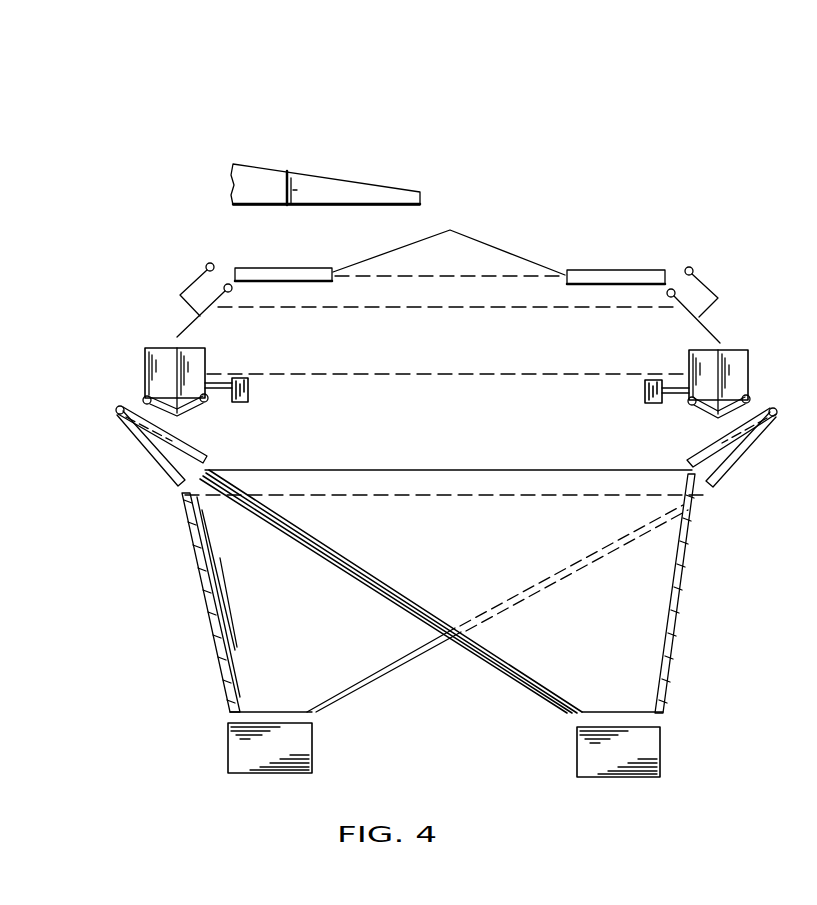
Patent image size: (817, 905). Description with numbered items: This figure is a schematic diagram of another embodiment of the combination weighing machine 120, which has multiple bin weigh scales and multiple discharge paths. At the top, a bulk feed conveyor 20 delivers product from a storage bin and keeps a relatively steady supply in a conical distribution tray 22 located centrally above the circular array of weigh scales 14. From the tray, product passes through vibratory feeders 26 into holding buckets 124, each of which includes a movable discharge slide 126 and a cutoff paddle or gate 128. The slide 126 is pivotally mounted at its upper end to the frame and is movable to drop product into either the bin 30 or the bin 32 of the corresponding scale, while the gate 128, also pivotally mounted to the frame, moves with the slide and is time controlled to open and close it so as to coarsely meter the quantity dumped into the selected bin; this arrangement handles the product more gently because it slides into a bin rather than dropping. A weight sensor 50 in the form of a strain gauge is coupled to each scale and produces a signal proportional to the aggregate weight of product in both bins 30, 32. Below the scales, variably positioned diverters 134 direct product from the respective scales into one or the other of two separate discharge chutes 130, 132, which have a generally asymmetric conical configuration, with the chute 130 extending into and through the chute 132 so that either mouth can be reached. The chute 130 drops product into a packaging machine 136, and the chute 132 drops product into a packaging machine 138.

The combination weighing machine 120 is at (629, 153).
The bulk feed conveyor 20 is at (353, 179).
The conical distribution tray 22 is at (500, 249).
The vibratory feeder 26 is at (270, 268).
The cutoff gate 128 is at (204, 268).
The discharge slide 126 is at (208, 305).
The holding bucket 124 is at (178, 283).
The weigh scale 14 is at (447, 374).
The bin 32 is at (193, 359).
The bin 30 is at (155, 395).
The weight sensor 50 is at (249, 388).
The diverter 134 is at (165, 465).
The discharge chute 132 is at (197, 581).
The discharge chute 130 is at (680, 597).
The packaging machine 138 is at (312, 737).
The packaging machine 136 is at (660, 740).